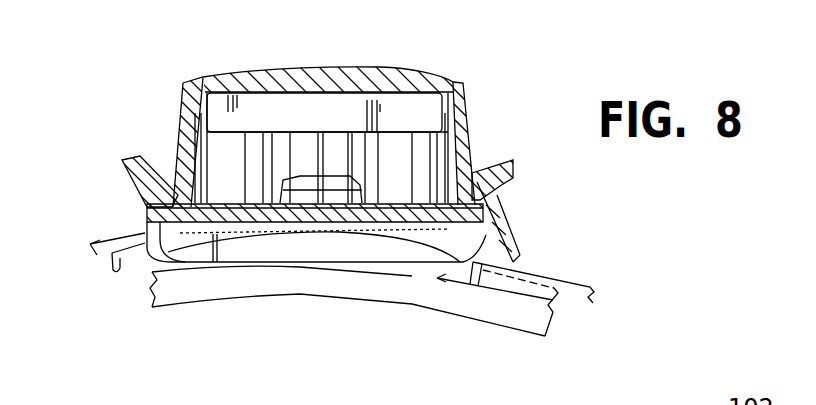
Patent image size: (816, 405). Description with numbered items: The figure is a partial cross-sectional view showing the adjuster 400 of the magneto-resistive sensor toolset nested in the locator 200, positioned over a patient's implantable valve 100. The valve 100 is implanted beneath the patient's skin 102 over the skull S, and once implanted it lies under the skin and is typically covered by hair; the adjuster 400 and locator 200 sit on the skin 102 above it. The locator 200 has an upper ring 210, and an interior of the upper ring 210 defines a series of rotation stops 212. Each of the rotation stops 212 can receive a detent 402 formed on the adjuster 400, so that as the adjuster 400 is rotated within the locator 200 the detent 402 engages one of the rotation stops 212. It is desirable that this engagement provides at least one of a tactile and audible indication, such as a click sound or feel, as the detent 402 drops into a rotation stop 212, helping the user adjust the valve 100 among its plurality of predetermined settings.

The adjuster 400 is at (400, 70).
The detent 402 is at (490, 191).
The upper ring 210 is at (123, 166).
The rotation stops 212 is at (512, 222).
The locator 200 is at (513, 241).
The skin 102 is at (117, 236).
The implantable valve 100 is at (412, 263).
The skull S is at (523, 320).